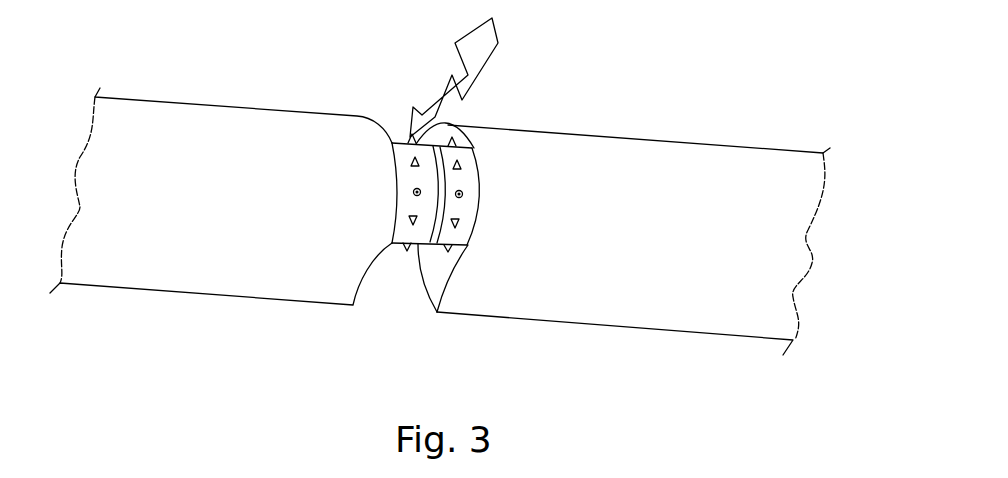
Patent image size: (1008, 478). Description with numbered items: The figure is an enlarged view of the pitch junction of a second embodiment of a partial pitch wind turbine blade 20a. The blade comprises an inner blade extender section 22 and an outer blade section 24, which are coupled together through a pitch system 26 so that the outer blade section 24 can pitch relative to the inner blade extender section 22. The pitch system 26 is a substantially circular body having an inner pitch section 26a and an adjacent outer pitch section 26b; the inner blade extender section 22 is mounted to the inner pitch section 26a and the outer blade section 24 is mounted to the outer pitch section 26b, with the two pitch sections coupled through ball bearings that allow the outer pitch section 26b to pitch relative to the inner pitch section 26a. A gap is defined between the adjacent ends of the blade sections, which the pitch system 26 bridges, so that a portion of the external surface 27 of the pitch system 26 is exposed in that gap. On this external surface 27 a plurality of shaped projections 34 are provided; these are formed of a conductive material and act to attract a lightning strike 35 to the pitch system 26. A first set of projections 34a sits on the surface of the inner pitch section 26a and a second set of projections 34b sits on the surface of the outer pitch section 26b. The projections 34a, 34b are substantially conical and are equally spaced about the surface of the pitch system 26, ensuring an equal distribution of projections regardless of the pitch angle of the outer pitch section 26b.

The wind turbine blade 20a is at (257, 80).
The inner blade extender section 22 is at (177, 253).
The outer blade section 24 is at (698, 308).
The pitch system 26 is at (368, 75).
The inner pitch section 26a is at (408, 207).
The outer pitch section 26b is at (462, 215).
The external surface 27 is at (392, 247).
The shaped projections 34 is at (488, 147).
The first set of projections 34a is at (412, 192).
The second set of projections 34b is at (462, 163).
The lightning strike 35 is at (468, 75).